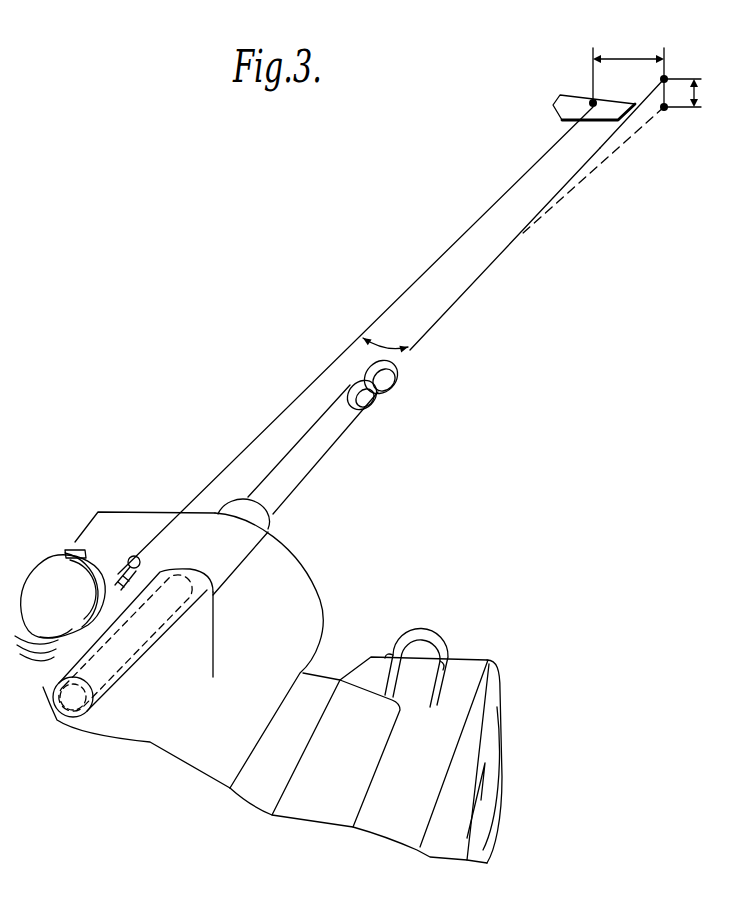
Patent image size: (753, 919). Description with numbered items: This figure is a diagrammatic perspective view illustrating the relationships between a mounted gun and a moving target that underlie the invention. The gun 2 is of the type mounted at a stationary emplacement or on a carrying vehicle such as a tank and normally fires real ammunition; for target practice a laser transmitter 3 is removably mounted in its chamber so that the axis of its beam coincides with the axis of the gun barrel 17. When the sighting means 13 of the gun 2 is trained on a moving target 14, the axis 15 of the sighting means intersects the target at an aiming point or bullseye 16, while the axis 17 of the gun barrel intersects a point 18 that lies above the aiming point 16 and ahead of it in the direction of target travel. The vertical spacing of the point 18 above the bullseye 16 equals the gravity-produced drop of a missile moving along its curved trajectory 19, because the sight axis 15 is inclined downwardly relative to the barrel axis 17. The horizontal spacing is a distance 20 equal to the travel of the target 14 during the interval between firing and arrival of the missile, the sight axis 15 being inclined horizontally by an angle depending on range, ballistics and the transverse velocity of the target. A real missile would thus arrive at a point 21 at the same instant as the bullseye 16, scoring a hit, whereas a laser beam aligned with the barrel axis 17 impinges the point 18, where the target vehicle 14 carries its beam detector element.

The gun 2 is at (300, 482).
The laser transmitter 3 is at (130, 670).
The sighting means 13 is at (114, 562).
The moving target 14 is at (557, 98).
The axis of the sighting means 15 is at (305, 394).
The aiming point or bullseye 16 is at (593, 100).
The axis of the gun barrel 17 is at (600, 149).
The point 18 is at (664, 79).
The curved trajectory 19 is at (618, 147).
The distance 20 is at (631, 56).
The point 21 is at (664, 108).